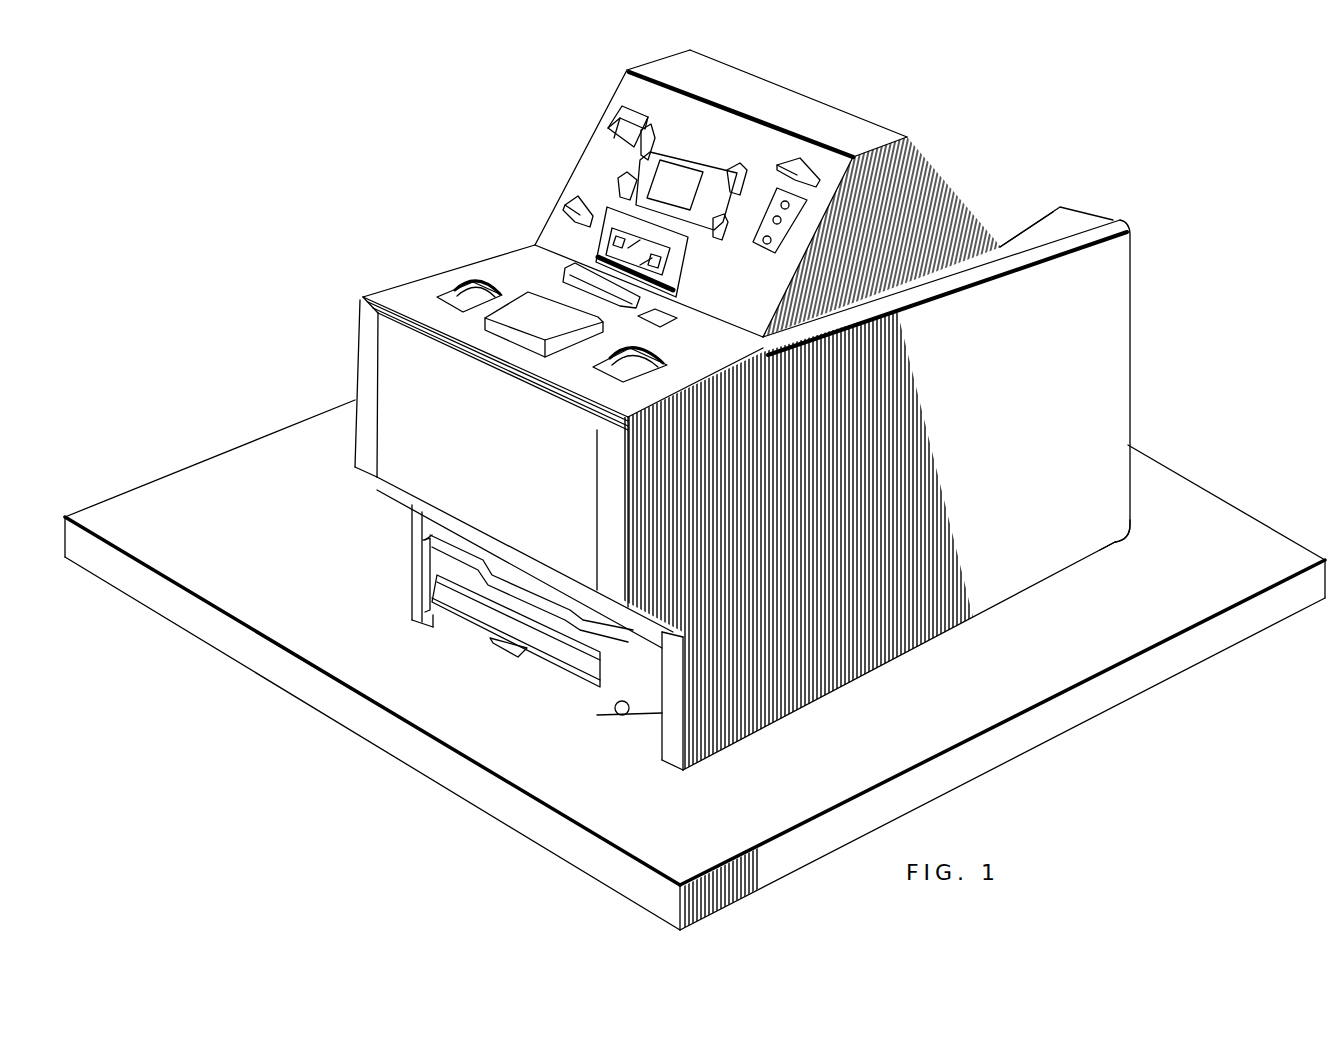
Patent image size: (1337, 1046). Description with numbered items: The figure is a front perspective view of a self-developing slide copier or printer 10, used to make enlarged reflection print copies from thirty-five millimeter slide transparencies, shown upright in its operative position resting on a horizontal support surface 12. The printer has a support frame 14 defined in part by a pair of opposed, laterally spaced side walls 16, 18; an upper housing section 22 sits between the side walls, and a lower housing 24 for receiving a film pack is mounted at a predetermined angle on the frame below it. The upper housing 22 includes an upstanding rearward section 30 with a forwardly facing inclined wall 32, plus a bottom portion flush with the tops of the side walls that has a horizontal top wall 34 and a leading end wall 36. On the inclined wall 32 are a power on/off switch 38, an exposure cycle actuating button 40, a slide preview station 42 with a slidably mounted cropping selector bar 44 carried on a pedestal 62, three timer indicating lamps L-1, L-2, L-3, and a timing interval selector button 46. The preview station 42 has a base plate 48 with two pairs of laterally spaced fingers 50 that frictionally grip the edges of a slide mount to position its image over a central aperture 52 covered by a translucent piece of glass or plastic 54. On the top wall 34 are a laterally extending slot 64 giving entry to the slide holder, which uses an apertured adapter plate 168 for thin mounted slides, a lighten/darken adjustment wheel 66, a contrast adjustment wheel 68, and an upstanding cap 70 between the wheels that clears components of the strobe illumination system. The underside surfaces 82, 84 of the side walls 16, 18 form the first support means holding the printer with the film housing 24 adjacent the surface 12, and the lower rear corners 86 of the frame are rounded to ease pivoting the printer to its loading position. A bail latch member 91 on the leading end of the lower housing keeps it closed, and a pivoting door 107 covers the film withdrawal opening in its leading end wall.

The self-developing slide copier or printer 10 is at (777, 456).
The support surface 12 is at (1240, 525).
The support frame 14 is at (1090, 210).
The side wall 16 is at (876, 495).
The side wall 18 is at (362, 318).
The upper housing section 22 is at (742, 187).
The lower housing 24 is at (527, 659).
The upstanding rearward section 30 is at (768, 187).
The inclined wall 32 is at (702, 104).
The horizontal top wall 34 is at (507, 265).
The leading end wall 36 is at (397, 378).
The power on/off switch 38 is at (580, 205).
The exposure cycle actuating button 40 is at (620, 128).
The slide preview station 42 is at (694, 146).
The cropping selector bar 44 is at (668, 256).
The timing interval selector button 46 is at (797, 162).
The base plate 48 is at (668, 150).
The fingers 50 is at (650, 135).
The central aperture 52 is at (688, 185).
The translucent glass or plastic 54 is at (683, 187).
The pedestal 62 is at (707, 257).
The slot 64 is at (662, 320).
The lighten/darken adjustment wheel 66 is at (546, 290).
The contrast adjustment wheel 68 is at (642, 355).
The upstanding cap 70 is at (570, 340).
The underside surface 82 is at (955, 630).
The underside surface 84 is at (422, 624).
The lower rear corners 86 is at (1140, 548).
The bail latch member 91 is at (628, 690).
The pivoting door 107 is at (470, 608).
The apertured adapter plate 168 is at (575, 271).
The timer indicating lamp L-1 is at (789, 206).
The timer indicating lamp L-2 is at (781, 222).
The timer indicating lamp L-3 is at (764, 242).